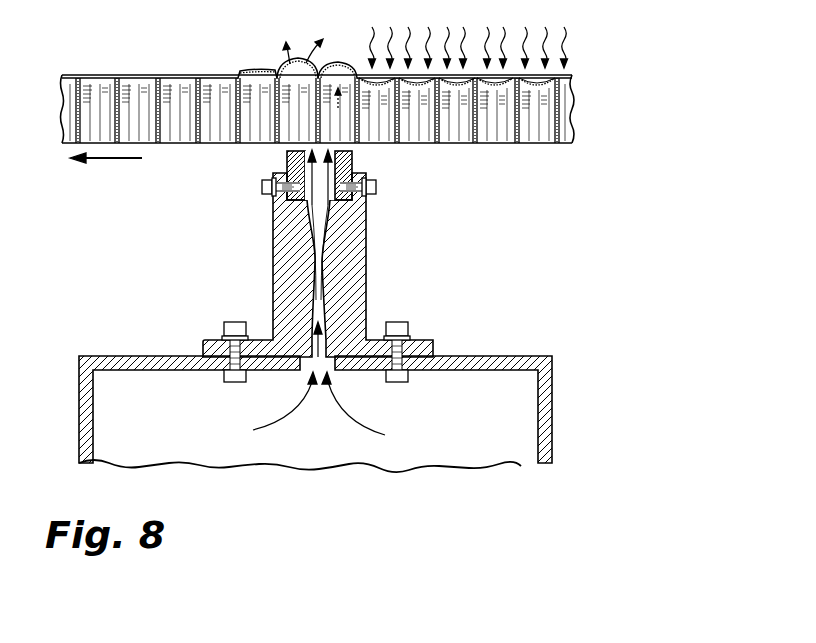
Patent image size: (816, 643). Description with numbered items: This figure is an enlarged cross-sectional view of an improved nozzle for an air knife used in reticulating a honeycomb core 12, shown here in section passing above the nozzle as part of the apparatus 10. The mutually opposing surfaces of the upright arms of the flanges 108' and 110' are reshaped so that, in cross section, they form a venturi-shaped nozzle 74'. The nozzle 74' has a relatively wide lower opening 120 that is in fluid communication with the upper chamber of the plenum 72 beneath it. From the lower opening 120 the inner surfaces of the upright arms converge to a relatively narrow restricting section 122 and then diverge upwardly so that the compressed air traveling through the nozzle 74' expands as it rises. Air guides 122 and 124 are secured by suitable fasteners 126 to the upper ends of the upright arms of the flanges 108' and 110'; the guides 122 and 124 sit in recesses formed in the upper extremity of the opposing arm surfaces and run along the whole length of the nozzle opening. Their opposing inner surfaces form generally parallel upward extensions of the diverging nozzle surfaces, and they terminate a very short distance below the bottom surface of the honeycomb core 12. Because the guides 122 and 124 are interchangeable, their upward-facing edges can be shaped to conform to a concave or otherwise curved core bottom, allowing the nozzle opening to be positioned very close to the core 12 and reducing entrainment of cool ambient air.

The heat exchanger panel / heat sink 10 is at (212, 72).
The honeycomb core 12 is at (578, 118).
The plenum 72 is at (518, 409).
The venturi-shaped nozzle 74' is at (338, 277).
The flange 108' is at (251, 265).
The flange 110' is at (392, 265).
The lower opening 120 is at (362, 394).
The restricting section / air guide 122 is at (288, 164).
The air guide 124 is at (353, 160).
The fasteners 126 is at (262, 187).